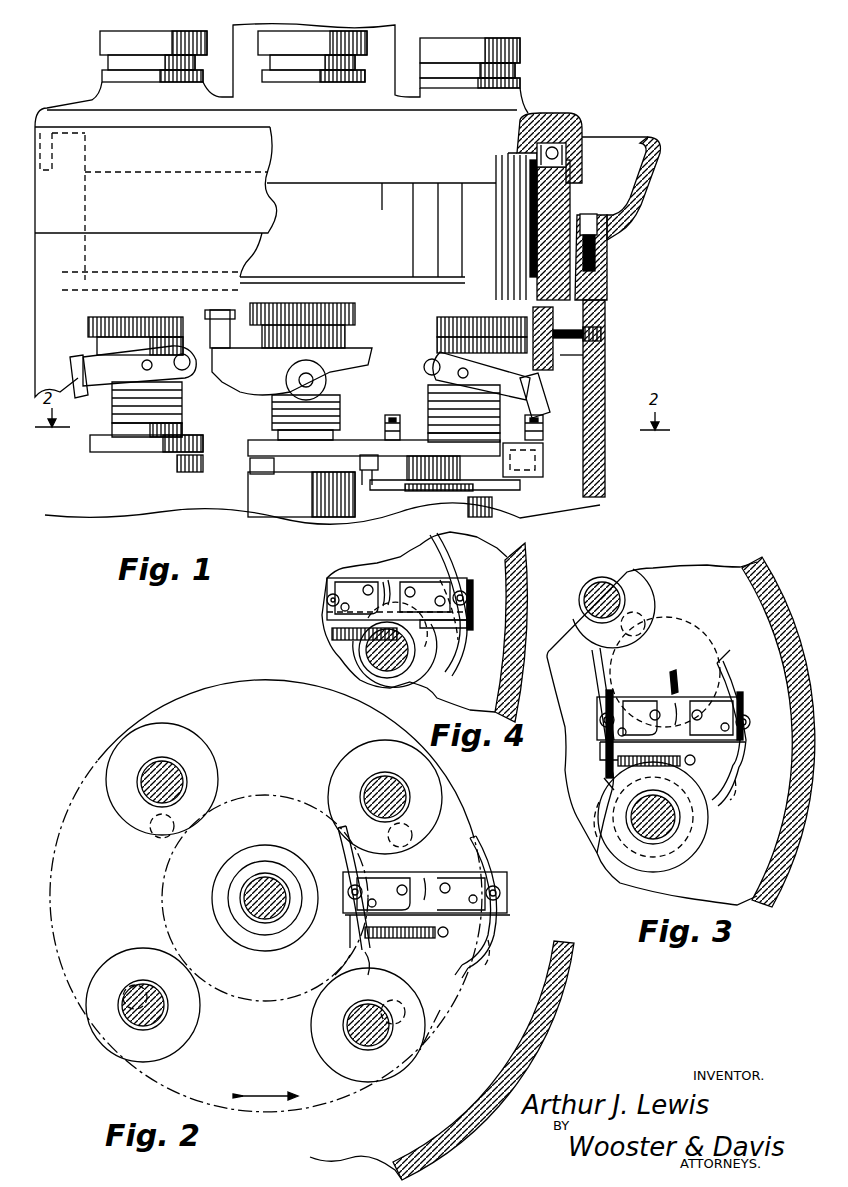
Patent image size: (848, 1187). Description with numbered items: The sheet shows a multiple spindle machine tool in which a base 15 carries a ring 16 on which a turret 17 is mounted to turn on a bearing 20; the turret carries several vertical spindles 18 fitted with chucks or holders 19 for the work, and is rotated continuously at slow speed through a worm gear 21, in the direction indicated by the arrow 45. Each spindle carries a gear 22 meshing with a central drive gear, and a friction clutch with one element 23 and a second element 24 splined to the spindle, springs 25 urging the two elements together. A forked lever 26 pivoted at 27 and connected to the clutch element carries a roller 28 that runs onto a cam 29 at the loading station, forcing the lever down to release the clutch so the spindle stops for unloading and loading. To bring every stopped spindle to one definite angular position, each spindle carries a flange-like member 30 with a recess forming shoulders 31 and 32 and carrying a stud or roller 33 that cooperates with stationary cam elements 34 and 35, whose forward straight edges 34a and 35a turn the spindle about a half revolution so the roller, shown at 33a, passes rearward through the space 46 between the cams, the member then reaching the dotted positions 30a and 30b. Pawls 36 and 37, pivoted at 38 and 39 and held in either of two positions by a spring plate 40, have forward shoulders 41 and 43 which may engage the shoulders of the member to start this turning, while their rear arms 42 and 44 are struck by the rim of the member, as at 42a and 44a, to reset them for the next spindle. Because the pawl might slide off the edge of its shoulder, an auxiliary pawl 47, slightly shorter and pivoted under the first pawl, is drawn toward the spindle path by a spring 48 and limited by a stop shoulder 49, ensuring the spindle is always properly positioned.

In FIG. 1, the base 15 is at (606, 300).
In FIG. 4, the base 15 is at (532, 584).
In FIG. 3, the base 15 is at (790, 602).
In FIG. 2, the base 15 is at (540, 1030).
In FIG. 1, the ring 16 is at (640, 214).
In FIG. 1, the turret 17 is at (552, 113).
In FIG. 4, the vertical spindles 18 is at (378, 650).
In FIG. 3, the vertical spindles 18 is at (606, 578).
In FIG. 2, the vertical spindles 18 is at (178, 780).
In FIG. 1, the chucks or holders 19 is at (100, 40).
In FIG. 1, the bearing 20 is at (572, 140).
In FIG. 1, the worm gear 21 is at (600, 273).
In FIG. 1, the gear 22 is at (308, 303).
In FIG. 1, the clutch element 23 is at (365, 282).
In FIG. 1, the clutch element 24 is at (90, 346).
In FIG. 1, the springs 25 is at (183, 407).
In FIG. 1, the forked lever 26 is at (270, 393).
In FIG. 1, the pivot 27 is at (184, 354).
In FIG. 1, the roller 28 is at (327, 380).
In FIG. 1, the cam 29 is at (600, 355).
In FIG. 1, the member 30 is at (140, 446).
In FIG. 4, the member 30 is at (435, 675).
In FIG. 3, the member 30 is at (634, 583).
In FIG. 2, the member 30 is at (345, 775).
In FIG. 3, the dotted line position 30a is at (600, 838).
In FIG. 3, the dotted line position 30b is at (668, 568).
In FIG. 4, the shoulder 31 is at (390, 580).
In FIG. 3, the shoulder 31 is at (613, 772).
In FIG. 2, the shoulder 31 is at (369, 976).
In FIG. 3, the shoulder 32 is at (708, 802).
In FIG. 2, the shoulder 32 is at (190, 990).
In FIG. 1, the stud or roller 33 is at (255, 472).
In FIG. 3, the stud or roller 33 is at (690, 775).
In FIG. 2, the stud or roller 33 is at (402, 1004).
In FIG. 3, the roller position 33a is at (650, 645).
In FIG. 1, the cam element 34 is at (420, 468).
In FIG. 4, the cam element 34 is at (350, 586).
In FIG. 3, the cam element 34 is at (640, 716).
In FIG. 2, the cam element 34 is at (381, 880).
In FIG. 4, the forward straight horizontal wall 34a is at (332, 634).
In FIG. 3, the forward straight horizontal wall 34a is at (600, 743).
In FIG. 1, the cam element 35 is at (505, 478).
In FIG. 4, the cam element 35 is at (423, 600).
In FIG. 3, the cam element 35 is at (705, 704).
In FIG. 2, the cam element 35 is at (462, 880).
In FIG. 4, the forward straight edge 35a is at (455, 616).
In FIG. 1, the pawl 36 is at (362, 460).
In FIG. 3, the pawl 36 is at (602, 772).
In FIG. 2, the pawl 36 is at (346, 930).
In FIG. 1, the pawl 37 is at (545, 455).
In FIG. 4, the pawl 37 is at (470, 636).
In FIG. 3, the pawl 37 is at (737, 776).
In FIG. 2, the pawl 37 is at (492, 942).
In FIG. 1, the pivot 38 is at (384, 428).
In FIG. 4, the pivot 38 is at (327, 600).
In FIG. 3, the pivot 38 is at (599, 720).
In FIG. 2, the pivot 38 is at (347, 890).
In FIG. 1, the pivot 39 is at (543, 428).
In FIG. 4, the pivot 39 is at (468, 596).
In FIG. 3, the pivot 39 is at (751, 722).
In FIG. 2, the pivot 39 is at (501, 891).
In FIG. 4, the spring plate 40 is at (469, 588).
In FIG. 3, the spring plate 40 is at (746, 698).
In FIG. 2, the spring plate 40 is at (312, 874).
In FIG. 3, the shoulder 41 is at (600, 782).
In FIG. 2, the shoulder 41 is at (350, 957).
In FIG. 3, the rear arm 42 is at (594, 670).
In FIG. 2, the rear arm 42 is at (338, 836).
In FIG. 2, the engagement position 42a is at (340, 836).
In FIG. 4, the shoulder 43 is at (452, 662).
In FIG. 3, the shoulder 43 is at (728, 806).
In FIG. 2, the shoulder 43 is at (470, 976).
In FIG. 3, the rear end 44 is at (740, 680).
In FIG. 2, the rear end 44 is at (488, 870).
In FIG. 3, the engagement position 44a is at (722, 660).
In FIG. 2, the engagement position 44a is at (473, 845).
In FIG. 2, the arrow 45 is at (260, 1096).
In FIG. 4, the space 46 is at (390, 586).
In FIG. 3, the space 46 is at (662, 703).
In FIG. 2, the space 46 is at (426, 880).
In FIG. 1, the auxiliary pawl 47 is at (368, 478).
In FIG. 3, the auxiliary pawl 47 is at (586, 760).
In FIG. 2, the auxiliary pawl 47 is at (352, 940).
In FIG. 1, the spring 48 is at (440, 491).
In FIG. 3, the spring 48 is at (688, 766).
In FIG. 2, the spring 48 is at (412, 940).
In FIG. 4, the stop shoulder 49 is at (372, 598).
In FIG. 3, the stop shoulder 49 is at (640, 728).
In FIG. 2, the stop shoulder 49 is at (376, 900).